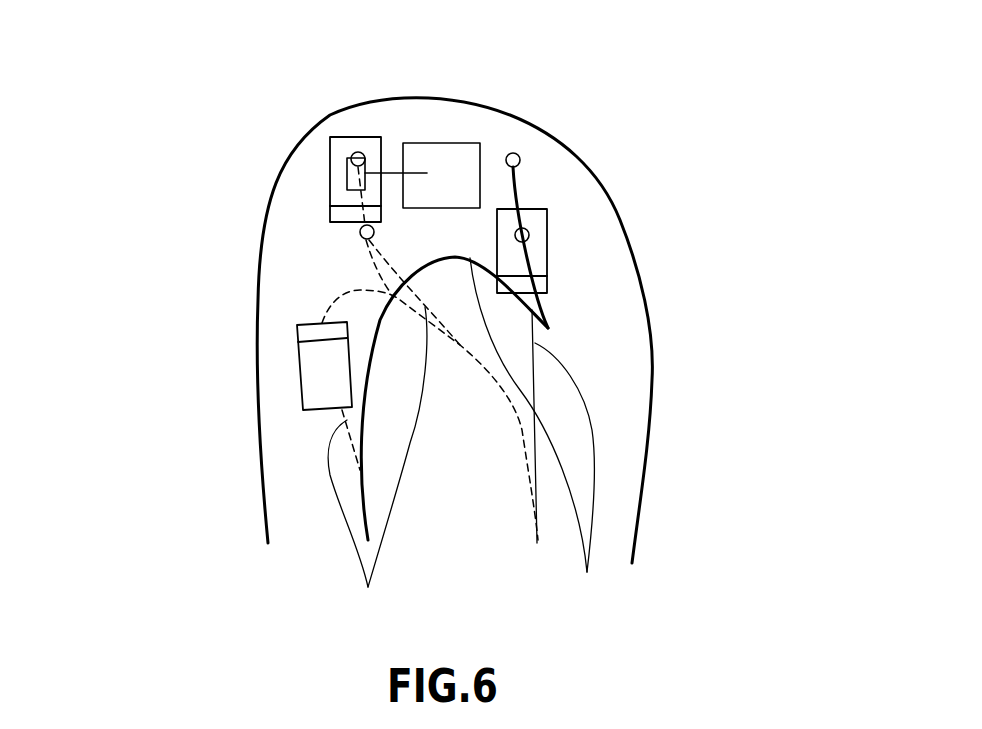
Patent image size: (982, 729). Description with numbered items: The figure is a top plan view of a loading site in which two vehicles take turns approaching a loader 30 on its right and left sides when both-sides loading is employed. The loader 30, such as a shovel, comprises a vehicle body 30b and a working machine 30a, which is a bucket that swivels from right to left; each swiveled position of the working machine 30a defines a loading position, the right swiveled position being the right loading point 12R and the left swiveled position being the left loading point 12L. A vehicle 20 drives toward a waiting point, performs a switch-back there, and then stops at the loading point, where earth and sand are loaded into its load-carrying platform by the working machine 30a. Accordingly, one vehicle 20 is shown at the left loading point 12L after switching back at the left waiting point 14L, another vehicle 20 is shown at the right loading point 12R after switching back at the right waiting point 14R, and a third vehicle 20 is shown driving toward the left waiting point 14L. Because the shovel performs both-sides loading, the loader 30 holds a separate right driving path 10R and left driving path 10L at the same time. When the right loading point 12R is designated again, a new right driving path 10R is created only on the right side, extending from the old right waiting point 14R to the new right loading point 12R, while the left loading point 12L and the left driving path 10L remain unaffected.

The left driving path 10L is at (438, 446).
The right driving path 10R is at (620, 400).
The left loading point 12L is at (351, 162).
The right loading point 12R is at (518, 156).
The left waiting point 14L is at (360, 234).
The right waiting point 14R is at (530, 235).
The vehicle 20 is at (330, 194).
The loader 30 is at (422, 109).
The working machine 30a is at (350, 150).
The vehicle body 30b is at (413, 143).